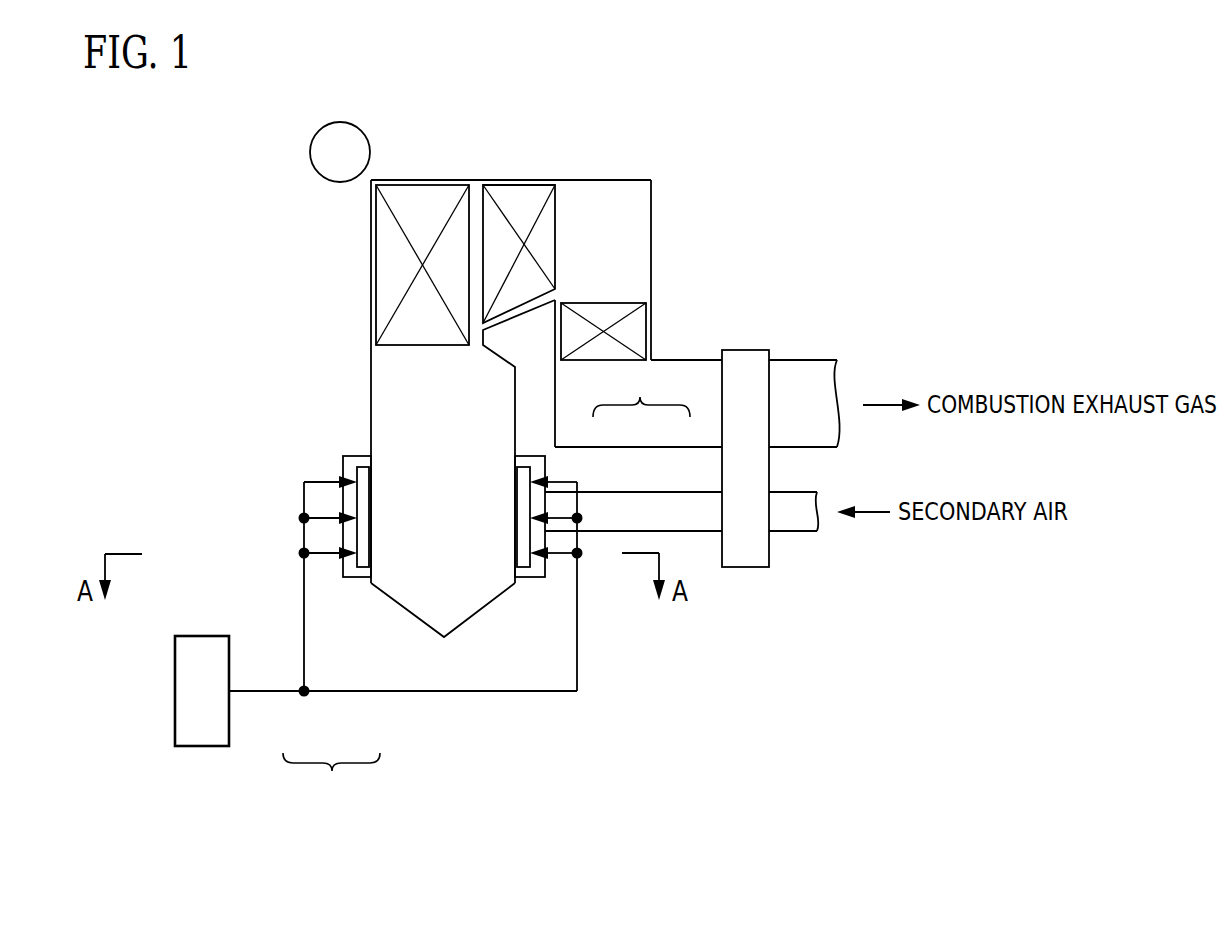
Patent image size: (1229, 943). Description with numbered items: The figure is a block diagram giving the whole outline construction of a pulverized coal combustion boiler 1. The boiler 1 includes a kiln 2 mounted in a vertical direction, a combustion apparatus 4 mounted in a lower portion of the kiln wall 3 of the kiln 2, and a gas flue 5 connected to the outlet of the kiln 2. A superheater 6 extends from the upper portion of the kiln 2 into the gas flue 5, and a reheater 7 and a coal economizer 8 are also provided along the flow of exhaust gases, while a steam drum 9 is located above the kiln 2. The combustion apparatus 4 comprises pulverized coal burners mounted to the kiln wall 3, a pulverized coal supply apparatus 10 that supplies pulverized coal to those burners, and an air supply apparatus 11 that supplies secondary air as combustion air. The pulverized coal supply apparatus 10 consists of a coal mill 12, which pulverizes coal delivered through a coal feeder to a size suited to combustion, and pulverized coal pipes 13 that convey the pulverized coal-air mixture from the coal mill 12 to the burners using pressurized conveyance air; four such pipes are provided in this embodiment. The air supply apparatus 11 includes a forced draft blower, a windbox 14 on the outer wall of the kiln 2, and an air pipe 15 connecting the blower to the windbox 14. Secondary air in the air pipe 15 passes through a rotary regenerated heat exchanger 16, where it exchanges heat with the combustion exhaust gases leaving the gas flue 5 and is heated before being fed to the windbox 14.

The boiler 1 is at (626, 80).
The kiln 2 is at (393, 375).
The kiln wall 3 is at (372, 430).
The combustion apparatus 4 is at (650, 752).
The gas flue 5 is at (610, 200).
The superheater 6 is at (416, 205).
The reheater 7 is at (513, 195).
The coal economizer 8 is at (633, 335).
The steam drum 9 is at (333, 122).
The pulverized coal supply apparatus 10 is at (331, 783).
The air supply apparatus 11 is at (641, 389).
The coal mill 12 is at (229, 724).
The pulverized coal pipe 13 is at (304, 607).
The windbox 14 is at (547, 467).
The air pipe 15 is at (663, 492).
The rotary regenerated heat exchanger 16 is at (753, 350).